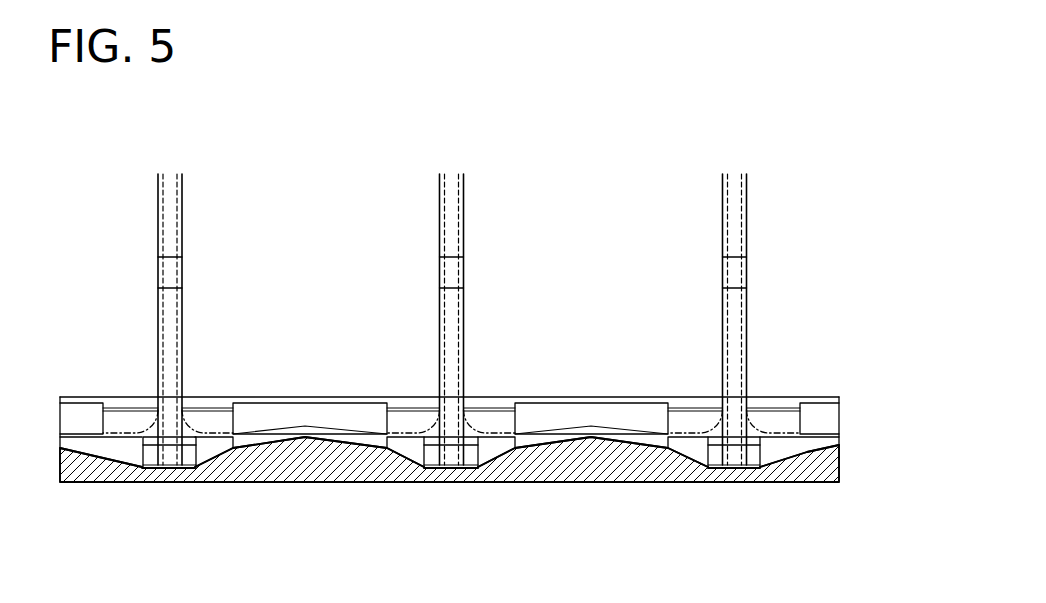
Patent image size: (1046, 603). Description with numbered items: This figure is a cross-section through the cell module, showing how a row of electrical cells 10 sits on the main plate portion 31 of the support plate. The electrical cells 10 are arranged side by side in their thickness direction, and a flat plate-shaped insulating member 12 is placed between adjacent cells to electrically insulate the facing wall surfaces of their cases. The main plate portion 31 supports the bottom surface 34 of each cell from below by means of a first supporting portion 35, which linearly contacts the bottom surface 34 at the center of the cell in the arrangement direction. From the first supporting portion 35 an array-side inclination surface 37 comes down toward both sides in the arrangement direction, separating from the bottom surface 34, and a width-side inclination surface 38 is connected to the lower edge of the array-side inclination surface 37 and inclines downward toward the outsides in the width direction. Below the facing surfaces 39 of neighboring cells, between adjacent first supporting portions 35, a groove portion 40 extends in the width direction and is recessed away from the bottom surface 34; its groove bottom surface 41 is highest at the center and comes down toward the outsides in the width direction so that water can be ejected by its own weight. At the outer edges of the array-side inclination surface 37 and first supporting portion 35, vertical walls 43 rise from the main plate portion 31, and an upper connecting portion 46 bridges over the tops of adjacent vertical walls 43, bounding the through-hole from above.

The electrical cell 10 is at (382, 210).
The insulating member 12 is at (172, 197).
The main plate portion 31 is at (565, 483).
The bottom surface 34 is at (481, 447).
The first supporting portion 35 is at (305, 428).
The array-side inclination surface 37 is at (90, 447).
The width-side inclination surface 38 is at (112, 444).
The facing surfaces 39 is at (168, 254).
The groove portion 40 is at (147, 455).
The groove bottom surface 41 is at (184, 455).
The vertical wall 43 is at (82, 410).
The upper connecting portion 46 is at (205, 408).